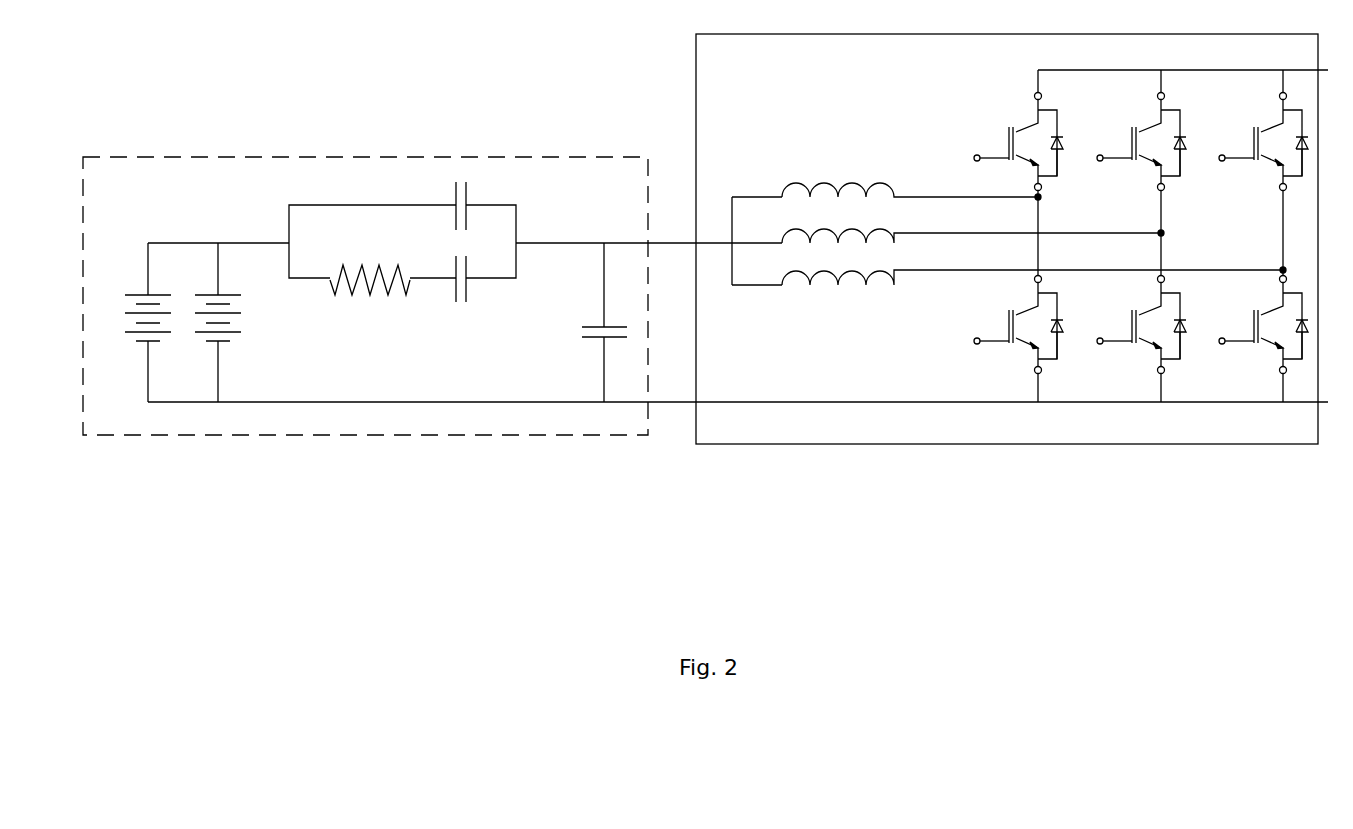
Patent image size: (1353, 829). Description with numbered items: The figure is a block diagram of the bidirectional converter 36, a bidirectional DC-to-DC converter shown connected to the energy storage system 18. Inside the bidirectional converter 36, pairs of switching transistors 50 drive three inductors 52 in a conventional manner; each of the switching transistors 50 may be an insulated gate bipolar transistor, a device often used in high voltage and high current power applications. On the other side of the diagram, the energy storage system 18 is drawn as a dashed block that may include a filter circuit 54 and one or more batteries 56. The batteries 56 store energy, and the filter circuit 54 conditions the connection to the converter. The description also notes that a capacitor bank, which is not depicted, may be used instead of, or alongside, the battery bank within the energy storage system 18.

The energy storage system 18 is at (392, 155).
The bidirectional converter 36 is at (896, 33).
The switching transistor 50 is at (1025, 125).
The inductor 52 is at (826, 178).
The filter circuit 54 is at (451, 366).
The battery 56 is at (258, 366).